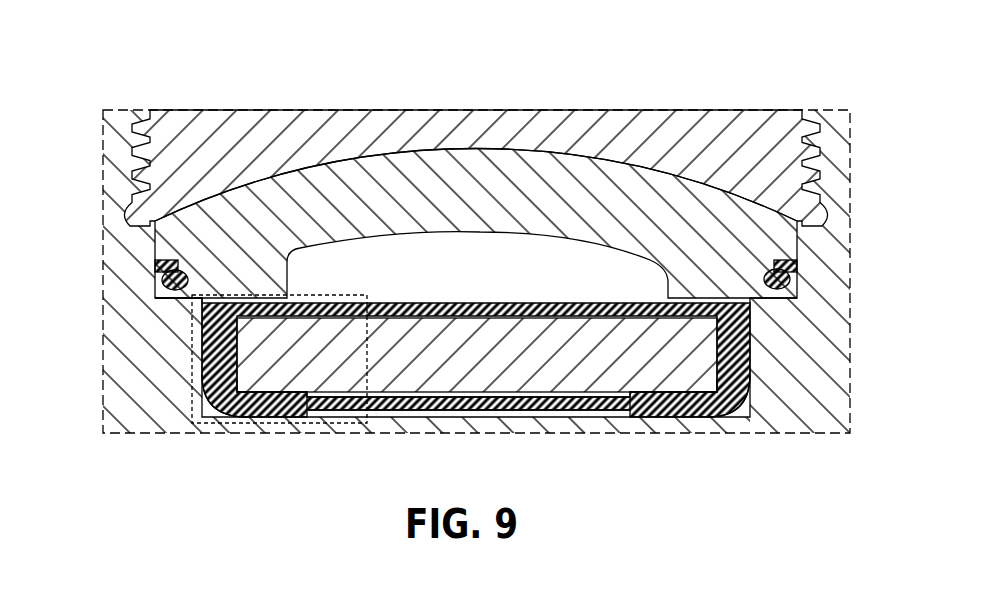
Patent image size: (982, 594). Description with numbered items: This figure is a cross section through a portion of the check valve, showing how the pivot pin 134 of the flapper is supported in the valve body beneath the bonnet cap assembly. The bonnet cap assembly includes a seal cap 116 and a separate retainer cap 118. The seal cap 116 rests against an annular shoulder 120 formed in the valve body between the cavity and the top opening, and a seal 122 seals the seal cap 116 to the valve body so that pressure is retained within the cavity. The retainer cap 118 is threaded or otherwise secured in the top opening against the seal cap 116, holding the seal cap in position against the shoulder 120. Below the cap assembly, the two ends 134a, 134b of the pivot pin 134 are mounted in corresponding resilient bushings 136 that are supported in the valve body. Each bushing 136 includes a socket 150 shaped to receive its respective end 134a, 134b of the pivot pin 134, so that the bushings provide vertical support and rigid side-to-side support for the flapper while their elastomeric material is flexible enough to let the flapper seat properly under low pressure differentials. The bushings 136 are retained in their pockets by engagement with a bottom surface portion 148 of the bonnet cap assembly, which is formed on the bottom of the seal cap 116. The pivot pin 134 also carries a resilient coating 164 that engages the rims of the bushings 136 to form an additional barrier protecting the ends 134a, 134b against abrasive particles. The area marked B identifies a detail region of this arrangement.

The seal cap 116 is at (341, 166).
The retainer cap 118 is at (186, 108).
The annular shoulder 120 is at (748, 302).
The seal 122 is at (794, 266).
The pivot pin 134 is at (432, 300).
The end of the pivot pin 134a is at (257, 413).
The end of the pivot pin 134b is at (675, 417).
The resilient bushing 136 is at (223, 402).
The bottom surface portion 148 is at (178, 306).
The socket 150 is at (257, 392).
The resilient coating 164 is at (487, 410).
The detail region B is at (190, 352).